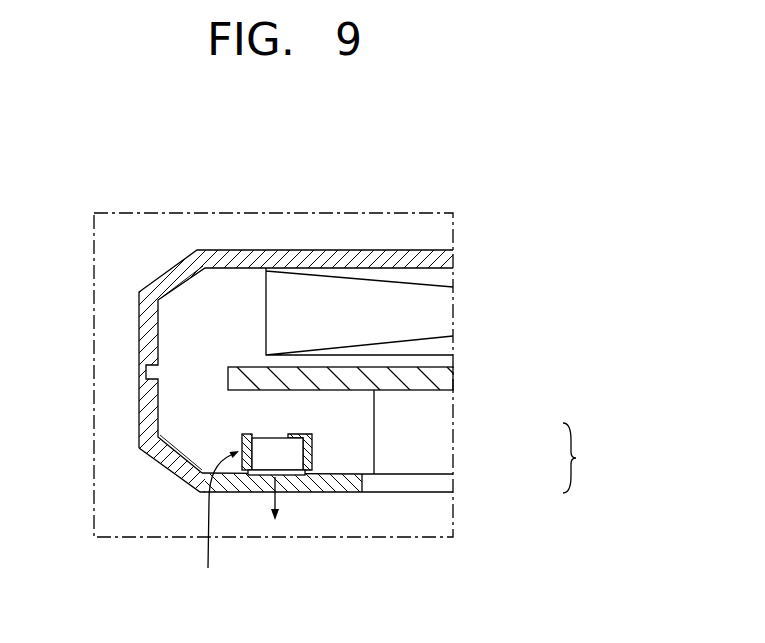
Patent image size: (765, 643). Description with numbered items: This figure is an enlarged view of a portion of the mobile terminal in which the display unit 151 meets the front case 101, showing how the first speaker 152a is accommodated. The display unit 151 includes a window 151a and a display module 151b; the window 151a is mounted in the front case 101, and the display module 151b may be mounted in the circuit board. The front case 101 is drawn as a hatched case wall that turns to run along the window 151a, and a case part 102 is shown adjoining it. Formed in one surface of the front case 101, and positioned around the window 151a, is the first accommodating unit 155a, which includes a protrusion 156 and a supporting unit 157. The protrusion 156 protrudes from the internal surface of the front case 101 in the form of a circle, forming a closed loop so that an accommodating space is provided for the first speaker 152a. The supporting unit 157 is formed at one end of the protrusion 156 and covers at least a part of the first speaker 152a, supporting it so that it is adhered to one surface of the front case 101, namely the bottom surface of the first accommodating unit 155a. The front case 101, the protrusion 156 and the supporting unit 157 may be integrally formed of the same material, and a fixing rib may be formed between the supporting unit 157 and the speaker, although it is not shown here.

The front case 101 is at (174, 471).
The rear case 102 is at (139, 322).
The display unit 151 is at (582, 458).
The window 151a is at (438, 483).
The display module 151b is at (440, 430).
The first speaker 152a is at (263, 460).
The first accommodating unit 155a is at (214, 524).
The protrusion 156 is at (305, 455).
The supporting unit 157 is at (297, 434).